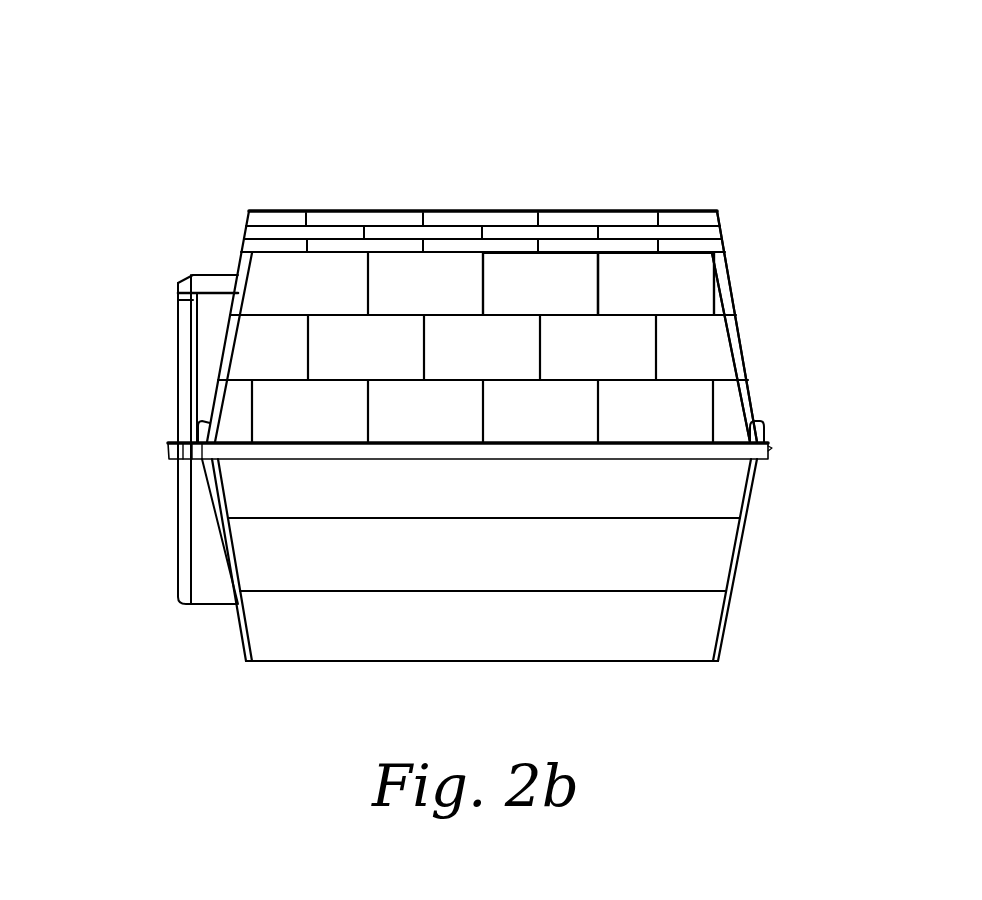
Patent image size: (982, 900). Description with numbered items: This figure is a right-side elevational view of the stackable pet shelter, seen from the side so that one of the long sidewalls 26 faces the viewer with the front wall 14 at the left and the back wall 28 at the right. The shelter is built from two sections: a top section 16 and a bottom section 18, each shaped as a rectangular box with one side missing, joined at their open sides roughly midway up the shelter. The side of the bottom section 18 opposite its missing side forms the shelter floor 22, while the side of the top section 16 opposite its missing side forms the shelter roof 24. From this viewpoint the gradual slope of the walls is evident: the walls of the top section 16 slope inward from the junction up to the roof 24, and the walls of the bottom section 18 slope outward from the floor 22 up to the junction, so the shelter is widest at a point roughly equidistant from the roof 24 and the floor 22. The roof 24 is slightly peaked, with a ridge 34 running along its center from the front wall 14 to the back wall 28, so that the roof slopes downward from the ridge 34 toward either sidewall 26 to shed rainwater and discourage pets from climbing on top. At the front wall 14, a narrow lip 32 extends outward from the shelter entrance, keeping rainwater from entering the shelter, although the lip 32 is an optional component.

The front wall 14 is at (243, 248).
The top section 16 is at (540, 277).
The bottom section 18 is at (702, 568).
The shelter floor 22 is at (655, 662).
The shelter roof 24 is at (396, 232).
The sidewalls 26 is at (665, 283).
The back wall 28 is at (737, 337).
The lip 32 is at (200, 288).
The ridge 34 is at (453, 210).